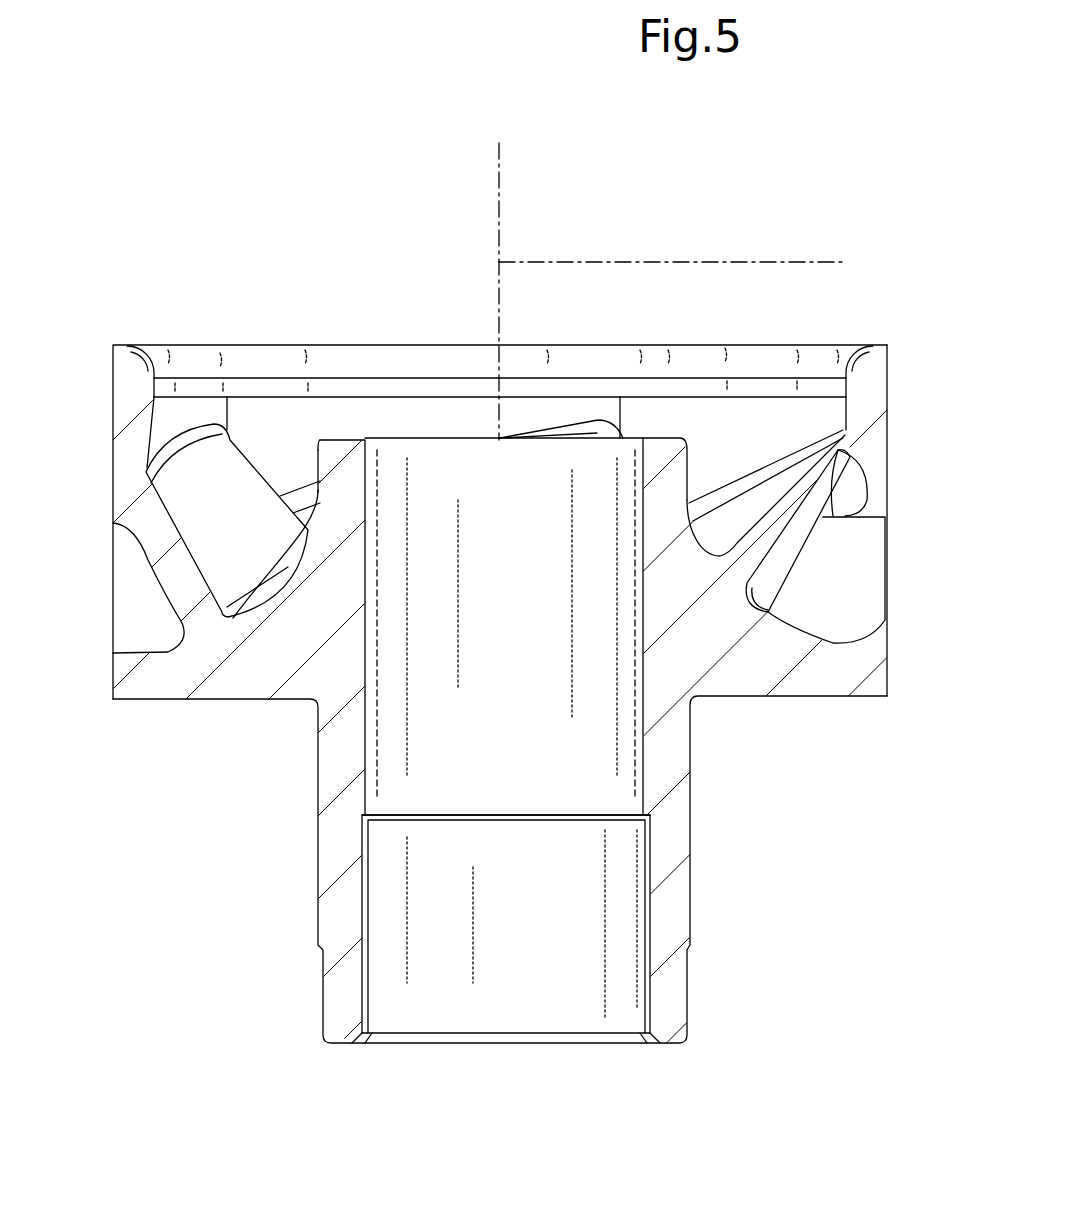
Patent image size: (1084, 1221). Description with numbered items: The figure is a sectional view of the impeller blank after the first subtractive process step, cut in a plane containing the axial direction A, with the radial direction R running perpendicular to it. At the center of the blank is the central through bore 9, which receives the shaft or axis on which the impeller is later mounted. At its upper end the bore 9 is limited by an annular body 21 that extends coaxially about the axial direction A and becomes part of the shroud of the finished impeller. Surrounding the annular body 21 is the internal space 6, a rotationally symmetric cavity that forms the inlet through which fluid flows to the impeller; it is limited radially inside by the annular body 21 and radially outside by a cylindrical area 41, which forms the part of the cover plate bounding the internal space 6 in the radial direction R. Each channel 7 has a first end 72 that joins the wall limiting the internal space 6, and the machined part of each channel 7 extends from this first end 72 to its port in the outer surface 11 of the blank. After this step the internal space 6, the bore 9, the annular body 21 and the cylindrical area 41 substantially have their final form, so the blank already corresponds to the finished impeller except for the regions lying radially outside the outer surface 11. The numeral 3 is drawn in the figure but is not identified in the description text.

The tapered roller 3 is at (212, 480).
The internal space 6 is at (430, 430).
The channel 7 is at (120, 609).
The central through bore 9 is at (522, 1015).
The outer surface 11 is at (887, 374).
The annular body 21 is at (340, 452).
The cylindrical area 41 is at (122, 398).
The first end 72 is at (253, 468).
The axial direction A is at (500, 182).
The radial direction R is at (672, 262).